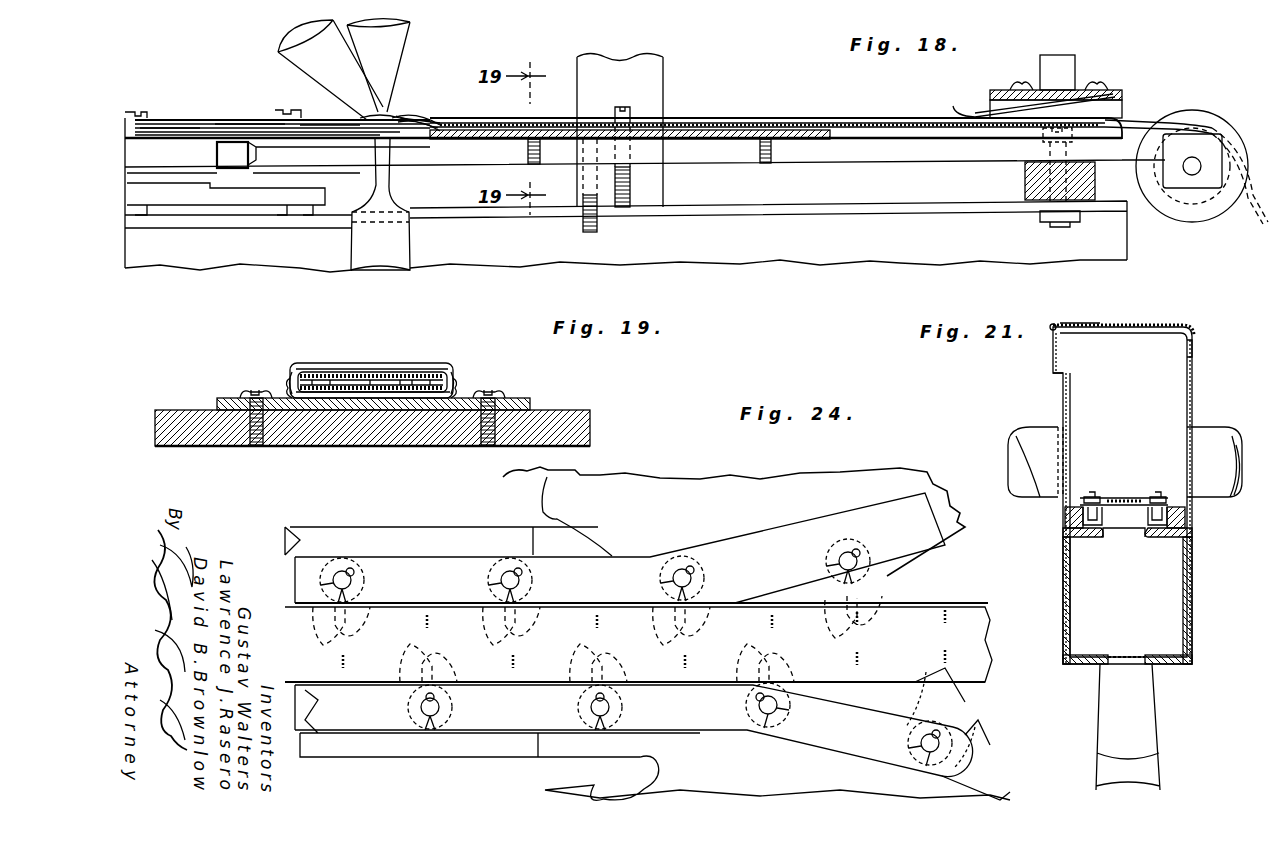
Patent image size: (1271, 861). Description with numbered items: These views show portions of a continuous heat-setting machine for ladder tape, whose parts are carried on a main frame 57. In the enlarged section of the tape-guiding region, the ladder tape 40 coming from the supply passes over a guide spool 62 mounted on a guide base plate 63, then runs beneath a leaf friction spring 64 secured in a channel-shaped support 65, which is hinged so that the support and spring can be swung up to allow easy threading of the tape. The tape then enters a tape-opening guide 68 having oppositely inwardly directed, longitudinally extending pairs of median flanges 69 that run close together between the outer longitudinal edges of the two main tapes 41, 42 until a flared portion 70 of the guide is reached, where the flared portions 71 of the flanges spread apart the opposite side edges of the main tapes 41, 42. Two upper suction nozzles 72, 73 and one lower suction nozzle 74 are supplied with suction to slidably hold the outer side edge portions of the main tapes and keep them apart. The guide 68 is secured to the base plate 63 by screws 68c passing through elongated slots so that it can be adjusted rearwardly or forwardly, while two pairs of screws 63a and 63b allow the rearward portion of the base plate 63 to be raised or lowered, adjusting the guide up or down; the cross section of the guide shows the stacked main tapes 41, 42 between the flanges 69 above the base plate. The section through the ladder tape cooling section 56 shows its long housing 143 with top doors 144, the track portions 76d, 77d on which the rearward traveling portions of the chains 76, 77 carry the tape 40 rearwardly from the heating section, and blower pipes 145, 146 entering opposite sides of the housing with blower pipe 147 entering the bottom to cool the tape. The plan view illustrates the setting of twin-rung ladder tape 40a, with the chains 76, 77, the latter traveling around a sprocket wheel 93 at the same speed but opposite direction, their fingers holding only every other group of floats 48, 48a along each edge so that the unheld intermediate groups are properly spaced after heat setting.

In FIG. 18, the main frame 57 is at (819, 244).
In FIG. 18, the tape-opening guide 68 is at (478, 124).
In FIG. 19, the tape-opening guide 68 is at (380, 366).
In FIG. 18, the screws 68c is at (527, 156).
In FIG. 19, the screws 68c is at (252, 446).
In FIG. 18, the guide base plate 63 is at (1120, 161).
In FIG. 19, the guide base plate 63 is at (438, 448).
In FIG. 18, the screws 63a is at (597, 221).
In FIG. 18, the screws 63b is at (632, 200).
In FIG. 18, the main tape 42 is at (338, 146).
In FIG. 19, the main tape 42 is at (498, 394).
In FIG. 21, the main tape 42 is at (1134, 513).
In FIG. 18, the main tape 41 is at (340, 116).
In FIG. 19, the main tape 41 is at (464, 370).
In FIG. 21, the main tape 41 is at (1124, 498).
In FIG. 18, the lower suction nozzle 74 is at (394, 192).
In FIG. 18, the upper suction nozzle 72 is at (398, 52).
In FIG. 18, the upper suction nozzle 73 is at (308, 69).
In FIG. 18, the flared portion 70 is at (412, 118).
In FIG. 19, the flared portion 70 is at (340, 356).
In FIG. 18, the flared flange portions 71 is at (423, 111).
In FIG. 18, the channel-shaped support 65 is at (1003, 88).
In FIG. 18, the leaf friction spring 64 is at (968, 90).
In FIG. 18, the guide spool 62 is at (1208, 115).
In FIG. 19, the floats 48 is at (412, 366).
In FIG. 24, the floats 48 is at (942, 614).
In FIG. 19, the floats 48a is at (316, 372).
In FIG. 24, the floats 48a is at (942, 654).
In FIG. 19, the median flanges 69 is at (286, 388).
In FIG. 24, the sprocket wheel 93 is at (547, 510).
In FIG. 24, the track portion 77d is at (382, 512).
In FIG. 21, the track portion 77d is at (1077, 506).
In FIG. 24, the chain 77 is at (916, 562).
In FIG. 21, the chain 77 is at (1094, 495).
In FIG. 24, the twin-rung ladder tape 40a is at (931, 594).
In FIG. 24, the chain 76 is at (887, 714).
In FIG. 21, the chain 76 is at (1160, 495).
In FIG. 24, the track 76d is at (430, 758).
In FIG. 21, the track 76d is at (1174, 506).
In FIG. 21, the housing 143 is at (1192, 394).
In FIG. 21, the top doors 144 is at (1155, 325).
In FIG. 21, the ladder tape cooling section 56 is at (1204, 373).
In FIG. 21, the blower pipe 145 is at (1038, 422).
In FIG. 21, the blower pipe 146 is at (1218, 419).
In FIG. 21, the ladder tape 40 is at (1130, 496).
In FIG. 21, the blower pipe 147 is at (1158, 696).